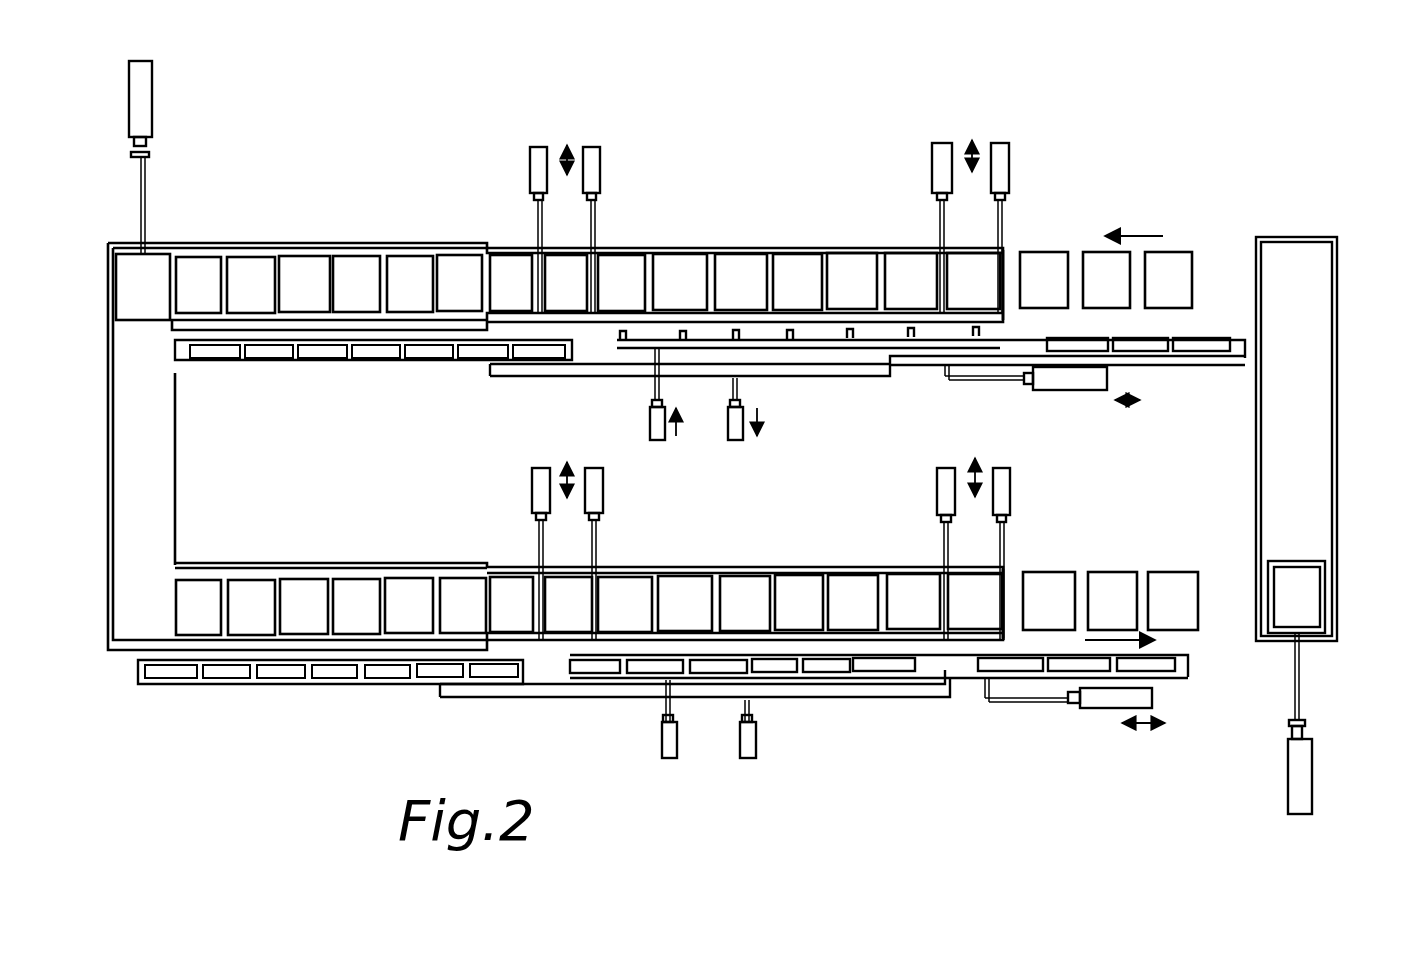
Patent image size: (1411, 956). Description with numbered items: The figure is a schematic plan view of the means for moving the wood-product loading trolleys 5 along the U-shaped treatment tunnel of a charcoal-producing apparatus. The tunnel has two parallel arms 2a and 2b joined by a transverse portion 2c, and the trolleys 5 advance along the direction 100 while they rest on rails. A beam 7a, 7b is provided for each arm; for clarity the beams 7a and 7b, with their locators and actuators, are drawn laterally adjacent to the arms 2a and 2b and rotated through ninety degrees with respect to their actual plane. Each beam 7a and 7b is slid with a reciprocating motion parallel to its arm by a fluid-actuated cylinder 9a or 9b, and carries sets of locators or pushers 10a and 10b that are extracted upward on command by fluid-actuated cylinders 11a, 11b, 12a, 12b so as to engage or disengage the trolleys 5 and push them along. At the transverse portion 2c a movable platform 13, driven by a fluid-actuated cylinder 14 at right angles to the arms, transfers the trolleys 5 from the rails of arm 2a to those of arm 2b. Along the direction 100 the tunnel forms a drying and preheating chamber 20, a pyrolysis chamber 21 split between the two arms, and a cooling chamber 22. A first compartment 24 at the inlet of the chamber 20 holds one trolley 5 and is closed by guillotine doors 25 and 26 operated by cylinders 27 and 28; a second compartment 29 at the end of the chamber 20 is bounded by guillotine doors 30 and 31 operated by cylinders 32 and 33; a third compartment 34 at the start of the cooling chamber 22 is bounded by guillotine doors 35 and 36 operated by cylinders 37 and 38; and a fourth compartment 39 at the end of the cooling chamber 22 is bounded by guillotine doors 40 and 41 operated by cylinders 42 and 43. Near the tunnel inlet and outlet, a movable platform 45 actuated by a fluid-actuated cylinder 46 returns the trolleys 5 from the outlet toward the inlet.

The arm of the tunnel 2a is at (323, 245).
The arm of the tunnel 2b is at (133, 656).
The transverse portion 2c is at (147, 433).
The trolley 5 is at (1178, 292).
The beam 7a is at (284, 375).
The beam 7b is at (263, 690).
The fluid-actuated cylinder 9a is at (1068, 383).
The fluid-actuated cylinder 9b is at (1110, 705).
The locators or pushers 10a is at (810, 350).
The locators or pushers 10b is at (377, 372).
The fluid-actuated cylinder 11a is at (727, 424).
The fluid-actuated cylinder 11b is at (752, 762).
The fluid-actuated cylinder 12a is at (648, 420).
The fluid-actuated cylinder 12b is at (670, 762).
The movable platform 13 is at (125, 281).
The fluid-actuated cylinder 14 is at (146, 112).
The drying and preheating chamber 20 is at (630, 297).
The pyrolysis chamber 21 is at (405, 270).
The cooling chamber 22 is at (797, 600).
The first compartment 24 is at (968, 252).
The guillotine door 25 is at (1007, 285).
The guillotine door 26 is at (940, 280).
The fluid-actuated cylinder 27 is at (1007, 160).
The fluid-actuated cylinder 28 is at (935, 160).
The second compartment 29 is at (566, 268).
The guillotine door 30 is at (596, 290).
The guillotine door 31 is at (540, 282).
The fluid-actuated cylinder 32 is at (600, 158).
The fluid-actuated cylinder 33 is at (530, 155).
The third compartment 34 is at (565, 590).
The guillotine door 35 is at (600, 618).
The guillotine door 36 is at (540, 600).
The fluid-actuated cylinder 37 is at (605, 493).
The fluid-actuated cylinder 38 is at (530, 486).
The fourth compartment 39 is at (970, 578).
The guillotine door 40 is at (1003, 613).
The guillotine door 41 is at (942, 598).
The fluid-actuated cylinder 42 is at (1011, 490).
The fluid-actuated cylinder 43 is at (937, 483).
The movable platform 45 is at (1312, 602).
The fluid-actuated cylinder 46 is at (1306, 753).
The direction of trolley advance 100 is at (1145, 232).